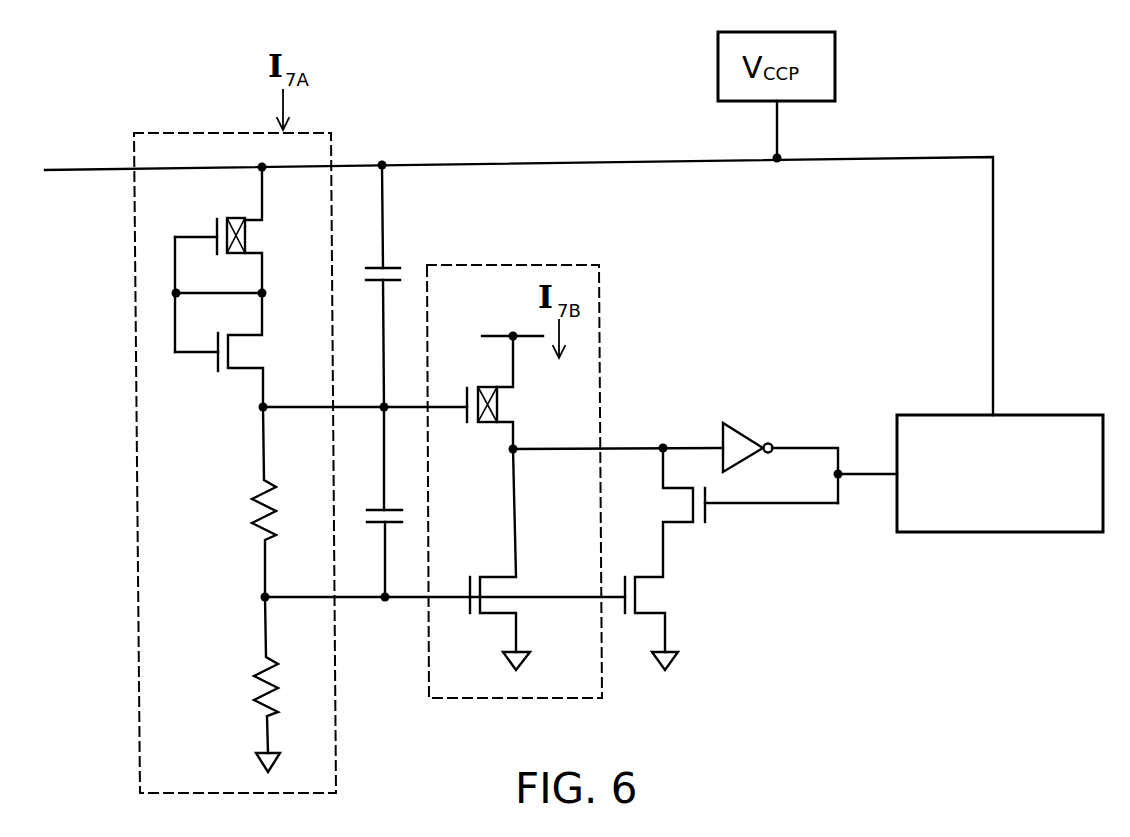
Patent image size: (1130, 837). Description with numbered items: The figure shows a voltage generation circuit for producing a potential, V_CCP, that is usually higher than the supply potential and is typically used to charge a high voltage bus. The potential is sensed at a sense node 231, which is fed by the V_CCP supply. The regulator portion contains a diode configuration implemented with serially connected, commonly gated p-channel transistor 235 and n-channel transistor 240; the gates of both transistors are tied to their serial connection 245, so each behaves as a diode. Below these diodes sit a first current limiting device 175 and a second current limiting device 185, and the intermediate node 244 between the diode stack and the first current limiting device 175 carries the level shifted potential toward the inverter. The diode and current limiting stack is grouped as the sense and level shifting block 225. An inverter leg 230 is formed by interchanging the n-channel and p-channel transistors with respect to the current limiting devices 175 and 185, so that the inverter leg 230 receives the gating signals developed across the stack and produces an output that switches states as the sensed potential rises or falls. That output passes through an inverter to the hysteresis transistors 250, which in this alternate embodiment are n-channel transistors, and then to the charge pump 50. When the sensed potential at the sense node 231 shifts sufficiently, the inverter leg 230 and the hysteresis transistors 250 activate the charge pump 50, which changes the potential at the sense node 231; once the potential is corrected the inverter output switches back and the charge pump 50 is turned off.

The charge pump 50 is at (1000, 473).
The first current limiting device 175 is at (258, 510).
The second current limiting device 185 is at (262, 684).
The reference current circuit 225 is at (188, 126).
The inverter leg 230 is at (536, 258).
The sense node 231 is at (780, 157).
The p-channel transistor 235 is at (240, 218).
The n-channel transistor 240 is at (246, 370).
The node 244 is at (259, 410).
The serial connection 245 is at (265, 293).
The hysteresis transistors 250 is at (653, 592).